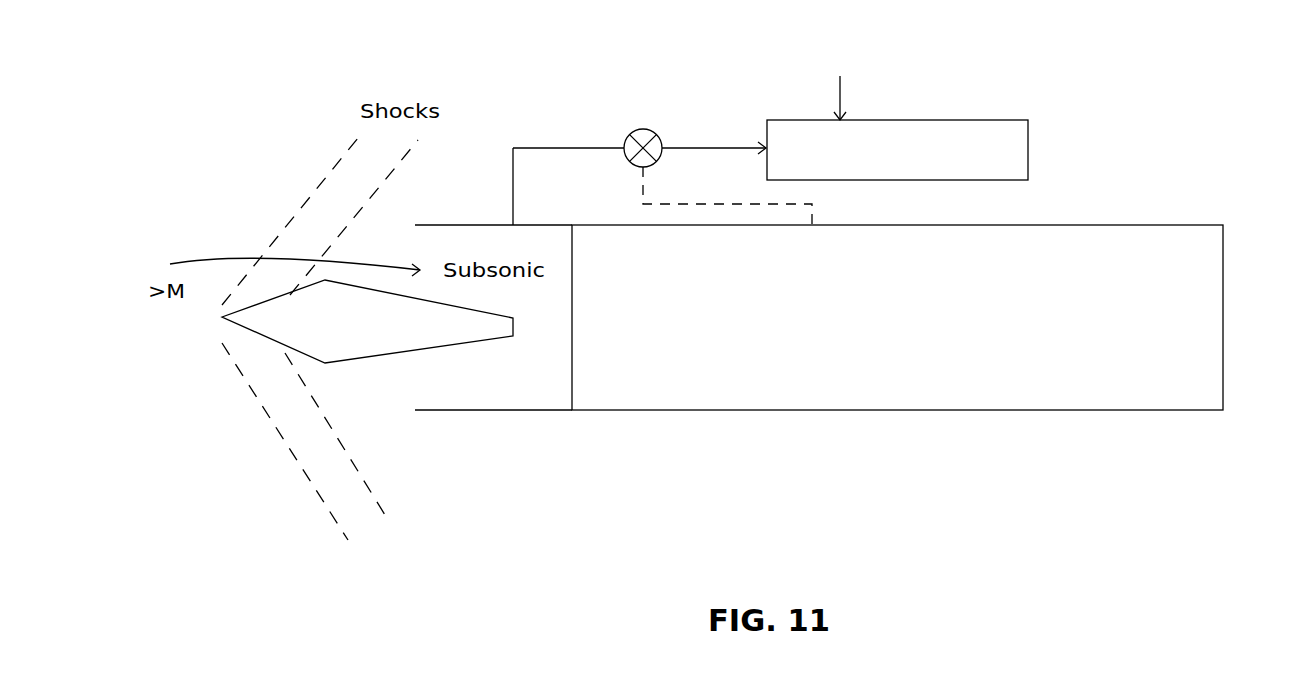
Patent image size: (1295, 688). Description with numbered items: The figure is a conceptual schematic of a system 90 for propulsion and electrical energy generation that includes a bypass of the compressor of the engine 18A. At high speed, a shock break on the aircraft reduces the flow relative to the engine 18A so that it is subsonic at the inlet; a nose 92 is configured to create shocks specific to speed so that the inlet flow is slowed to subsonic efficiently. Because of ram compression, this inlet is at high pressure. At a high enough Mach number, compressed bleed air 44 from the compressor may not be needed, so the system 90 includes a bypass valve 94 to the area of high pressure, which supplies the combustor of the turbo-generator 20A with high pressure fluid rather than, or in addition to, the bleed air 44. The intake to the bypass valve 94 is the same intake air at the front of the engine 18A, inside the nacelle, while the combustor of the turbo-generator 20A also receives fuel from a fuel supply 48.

The system 90 is at (1169, 61).
The nose 92 is at (355, 363).
The bypass valve 94 is at (637, 130).
The compressed bleed air 44 is at (683, 204).
The fuel supply 48 is at (841, 87).
The generator 20A is at (920, 176).
The engine 18A is at (920, 346).